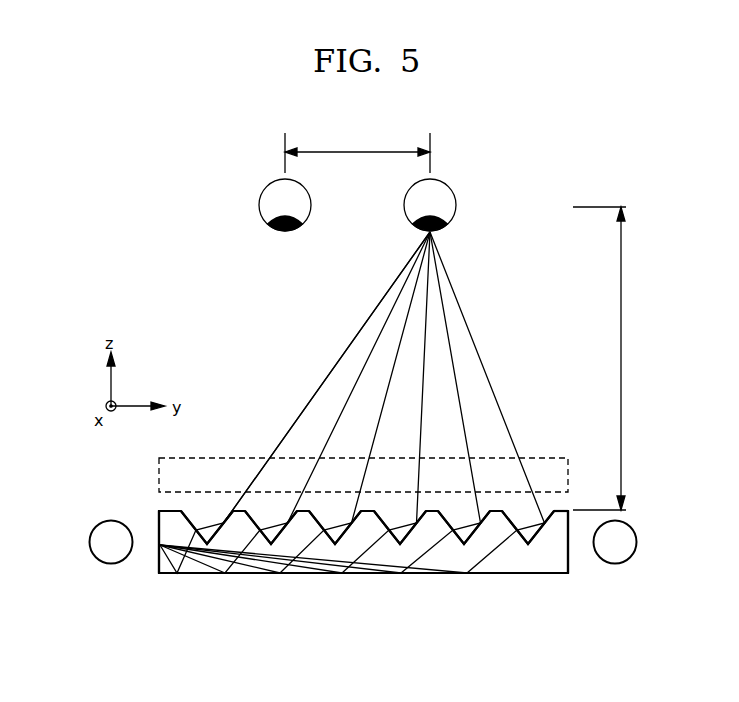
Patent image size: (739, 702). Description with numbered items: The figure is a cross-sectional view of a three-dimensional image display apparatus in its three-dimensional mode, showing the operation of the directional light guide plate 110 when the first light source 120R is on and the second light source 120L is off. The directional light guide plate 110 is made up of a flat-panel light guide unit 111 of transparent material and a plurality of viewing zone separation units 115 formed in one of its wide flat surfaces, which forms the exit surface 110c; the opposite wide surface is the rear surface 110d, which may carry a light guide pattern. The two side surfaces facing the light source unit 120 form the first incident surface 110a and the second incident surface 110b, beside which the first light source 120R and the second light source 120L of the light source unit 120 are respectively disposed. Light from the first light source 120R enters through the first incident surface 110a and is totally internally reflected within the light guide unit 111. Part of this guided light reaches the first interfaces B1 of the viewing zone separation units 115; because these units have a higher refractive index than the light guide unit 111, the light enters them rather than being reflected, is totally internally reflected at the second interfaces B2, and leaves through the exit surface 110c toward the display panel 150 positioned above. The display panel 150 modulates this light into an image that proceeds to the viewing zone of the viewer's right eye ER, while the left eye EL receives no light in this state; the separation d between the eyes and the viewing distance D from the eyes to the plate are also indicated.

The directional light guide plate 110 is at (295, 595).
The first incident surface 110a is at (158, 563).
The second incident surface 110b is at (568, 550).
The exit surface 110c is at (548, 509).
The rear surface 110d is at (538, 573).
The light guide unit 111 is at (510, 568).
The viewing zone separation units 115 is at (186, 510).
The light source unit 120 is at (361, 601).
The first light source 120R is at (99, 565).
The second light source 120L is at (625, 563).
The display panel 150 is at (162, 475).
The first interface B1 is at (197, 528).
The second interface B2 is at (228, 520).
The left eye EL is at (272, 202).
The right eye ER is at (443, 202).
The interpupillary distance d is at (357, 152).
The viewing distance D is at (608, 358).